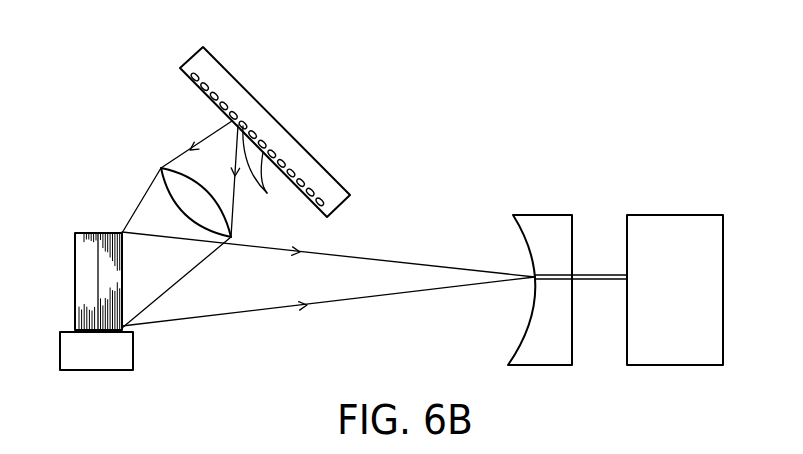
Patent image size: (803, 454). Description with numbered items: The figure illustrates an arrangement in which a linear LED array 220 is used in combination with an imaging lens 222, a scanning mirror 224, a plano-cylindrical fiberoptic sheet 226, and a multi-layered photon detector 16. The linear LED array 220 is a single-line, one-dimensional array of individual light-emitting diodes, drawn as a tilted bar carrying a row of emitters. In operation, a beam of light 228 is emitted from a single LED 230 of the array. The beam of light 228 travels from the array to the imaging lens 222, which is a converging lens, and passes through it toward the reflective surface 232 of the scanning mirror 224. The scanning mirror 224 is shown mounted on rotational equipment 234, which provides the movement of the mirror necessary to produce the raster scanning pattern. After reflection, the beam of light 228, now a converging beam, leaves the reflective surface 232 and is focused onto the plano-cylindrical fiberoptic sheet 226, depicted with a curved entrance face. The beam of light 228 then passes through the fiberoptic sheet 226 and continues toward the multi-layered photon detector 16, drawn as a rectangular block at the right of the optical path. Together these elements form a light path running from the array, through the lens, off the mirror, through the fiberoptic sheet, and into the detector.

The multi-layered photon detector 16 is at (667, 210).
The linear LED array 220 is at (237, 67).
The imaging lens 222 is at (163, 167).
The scanning mirror 224 is at (62, 241).
The plano-cylindrical fiberoptic sheet 226 is at (535, 222).
The beam of light 228 is at (206, 133).
The single LED 230 is at (267, 172).
The reflective surface 232 is at (122, 292).
The rotational equipment 234 is at (123, 357).